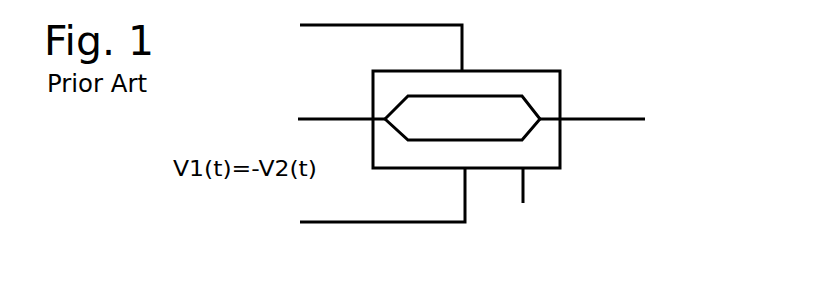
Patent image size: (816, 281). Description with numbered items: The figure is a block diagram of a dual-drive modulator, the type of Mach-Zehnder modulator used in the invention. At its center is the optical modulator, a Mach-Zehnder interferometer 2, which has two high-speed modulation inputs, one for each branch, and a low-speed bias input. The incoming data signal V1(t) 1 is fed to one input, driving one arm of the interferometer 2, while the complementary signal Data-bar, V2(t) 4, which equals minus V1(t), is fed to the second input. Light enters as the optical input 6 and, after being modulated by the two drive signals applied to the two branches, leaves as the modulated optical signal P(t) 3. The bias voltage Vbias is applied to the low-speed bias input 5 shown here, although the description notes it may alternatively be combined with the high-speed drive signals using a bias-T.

The drive signal V1(t) 1 is at (463, 24).
The Mach-Zehnder interferometer 2 is at (528, 66).
The modulated optical signal P(t) 3 is at (585, 125).
The drive signal V2(t) 4 is at (440, 224).
The low-speed bias input 5 is at (522, 193).
The optical input 6 is at (340, 117).